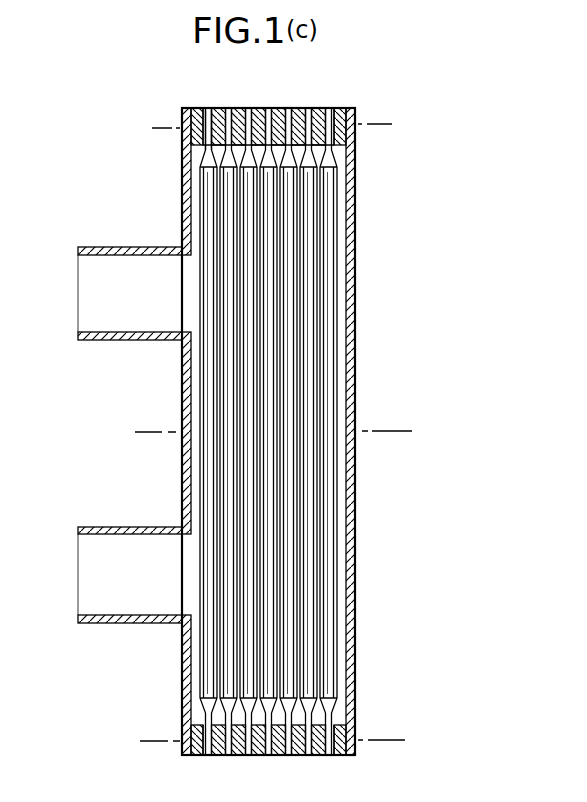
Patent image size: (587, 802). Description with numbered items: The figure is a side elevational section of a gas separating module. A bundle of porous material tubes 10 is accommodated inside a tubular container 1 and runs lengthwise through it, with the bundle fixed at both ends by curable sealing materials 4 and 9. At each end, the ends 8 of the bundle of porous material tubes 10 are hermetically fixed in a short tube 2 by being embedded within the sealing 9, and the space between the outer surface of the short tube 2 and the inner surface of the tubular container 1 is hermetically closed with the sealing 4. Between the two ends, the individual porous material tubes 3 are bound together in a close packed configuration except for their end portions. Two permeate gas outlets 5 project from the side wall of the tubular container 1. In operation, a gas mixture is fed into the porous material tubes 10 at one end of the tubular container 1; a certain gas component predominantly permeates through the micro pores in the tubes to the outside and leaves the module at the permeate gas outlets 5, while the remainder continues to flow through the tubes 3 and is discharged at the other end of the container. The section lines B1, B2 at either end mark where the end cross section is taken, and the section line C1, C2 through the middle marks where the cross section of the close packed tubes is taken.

The tubular container 1 is at (354, 268).
The short tube 2 is at (341, 108).
The porous material tube 3 is at (327, 232).
The sealing material 4 is at (192, 108).
The permeate gas outlet 5 is at (92, 294).
The end of the bundle of porous material tubes 8 is at (206, 110).
The sealing material 9 is at (298, 108).
The bundle of porous material tubes 10 is at (307, 345).
The section line B1-B2 B1 is at (148, 436).
The section line B1- B2 is at (395, 433).
The section line C1-C2 C1 is at (142, 434).
The section line C1- C2 is at (402, 432).